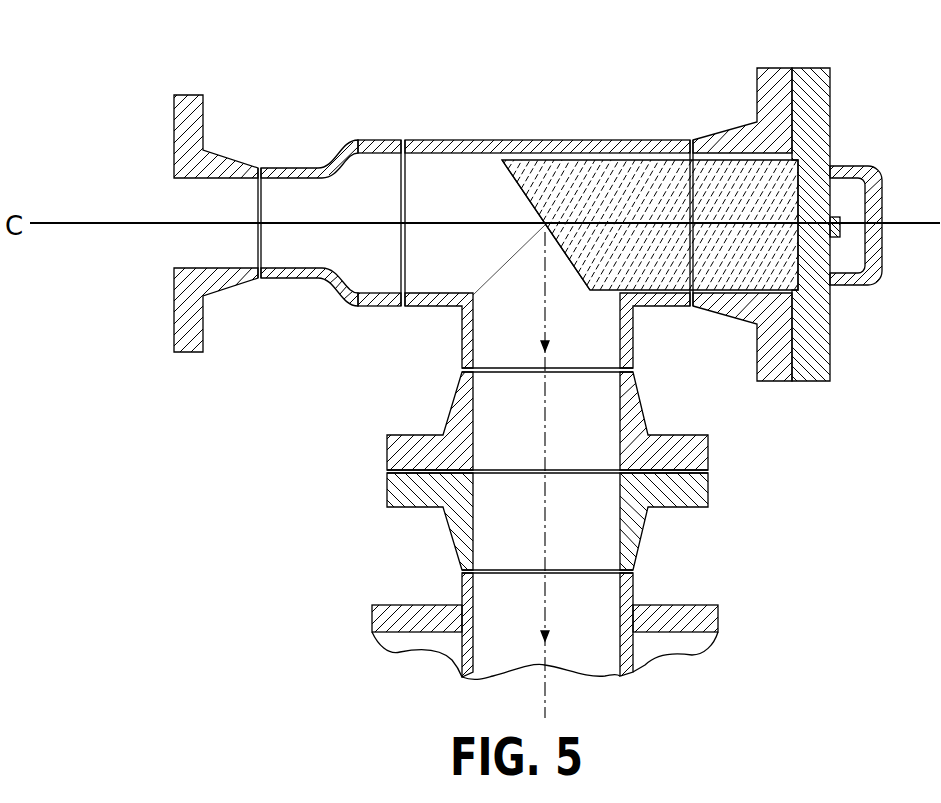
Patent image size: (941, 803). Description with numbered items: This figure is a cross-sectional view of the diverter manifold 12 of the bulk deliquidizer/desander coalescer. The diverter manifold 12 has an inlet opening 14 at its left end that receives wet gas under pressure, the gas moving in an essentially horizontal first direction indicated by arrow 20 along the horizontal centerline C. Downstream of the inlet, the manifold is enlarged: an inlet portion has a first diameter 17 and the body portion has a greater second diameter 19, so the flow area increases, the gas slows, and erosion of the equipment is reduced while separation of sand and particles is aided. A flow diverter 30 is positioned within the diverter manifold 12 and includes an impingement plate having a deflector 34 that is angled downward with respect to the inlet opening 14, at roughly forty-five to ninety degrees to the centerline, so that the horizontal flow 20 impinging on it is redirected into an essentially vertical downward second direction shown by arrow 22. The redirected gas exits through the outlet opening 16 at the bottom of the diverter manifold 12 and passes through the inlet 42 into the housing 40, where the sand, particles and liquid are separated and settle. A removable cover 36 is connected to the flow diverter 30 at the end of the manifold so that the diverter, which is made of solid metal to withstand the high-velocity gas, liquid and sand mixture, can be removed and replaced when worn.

The diverter manifold 12 is at (170, 186).
The inlet opening 14 is at (172, 198).
The outlet opening 16 is at (500, 418).
The first diameter 17 is at (293, 183).
The second diameter 19 is at (372, 160).
The arrow (horizontal gas flow) 20 is at (431, 223).
The arrow (vertical gas flow) 22 is at (546, 293).
The flow diverter 30 is at (527, 162).
The deflector 34 is at (517, 190).
The removable cover 36 is at (817, 100).
The housing 40 is at (357, 615).
The inlet 42 is at (497, 608).